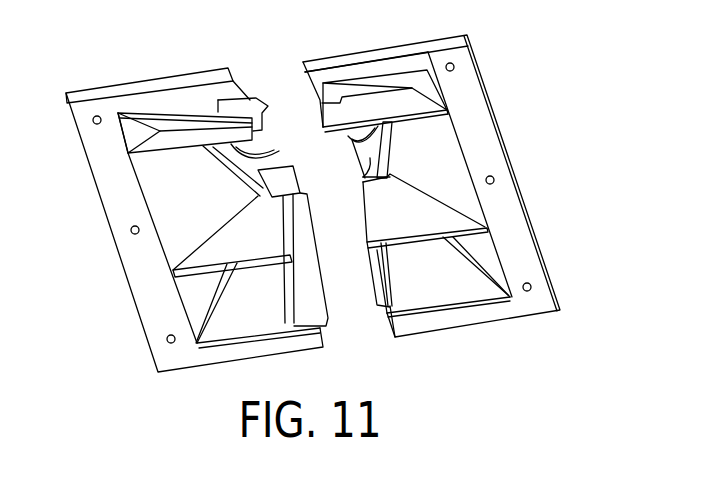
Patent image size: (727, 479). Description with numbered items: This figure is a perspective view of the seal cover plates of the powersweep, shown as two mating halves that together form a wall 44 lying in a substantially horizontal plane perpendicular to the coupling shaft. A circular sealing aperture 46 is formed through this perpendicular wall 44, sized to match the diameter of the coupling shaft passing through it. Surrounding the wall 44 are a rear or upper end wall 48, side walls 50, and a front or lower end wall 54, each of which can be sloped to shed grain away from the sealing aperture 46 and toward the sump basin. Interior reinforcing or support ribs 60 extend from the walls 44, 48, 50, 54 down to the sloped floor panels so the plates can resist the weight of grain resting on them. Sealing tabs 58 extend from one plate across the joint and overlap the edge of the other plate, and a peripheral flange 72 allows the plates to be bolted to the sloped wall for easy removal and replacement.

The wall 44 is at (371, 155).
The sealing aperture 46 is at (360, 150).
The rear or upper end wall 48 is at (377, 85).
The side walls 50 is at (193, 286).
The front or lower end wall 54 is at (407, 287).
The sealing tabs 58 is at (268, 120).
The interior reinforcing or support ribs 60 is at (195, 130).
The peripheral flange 72 is at (108, 160).